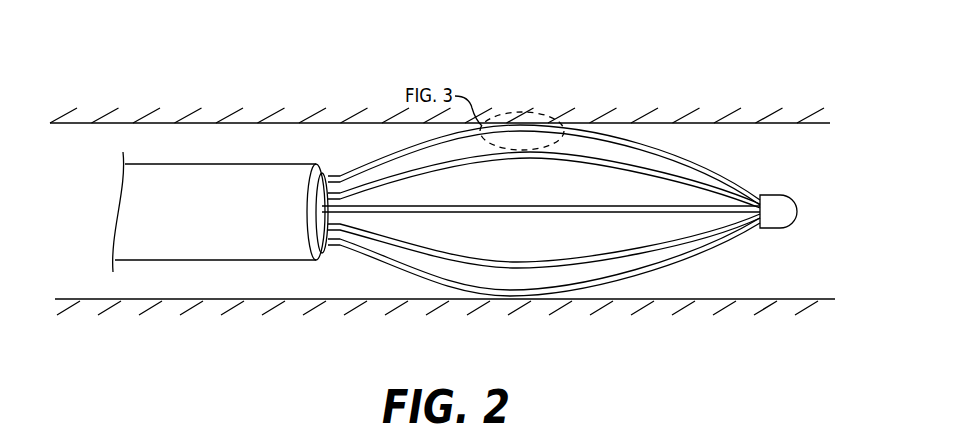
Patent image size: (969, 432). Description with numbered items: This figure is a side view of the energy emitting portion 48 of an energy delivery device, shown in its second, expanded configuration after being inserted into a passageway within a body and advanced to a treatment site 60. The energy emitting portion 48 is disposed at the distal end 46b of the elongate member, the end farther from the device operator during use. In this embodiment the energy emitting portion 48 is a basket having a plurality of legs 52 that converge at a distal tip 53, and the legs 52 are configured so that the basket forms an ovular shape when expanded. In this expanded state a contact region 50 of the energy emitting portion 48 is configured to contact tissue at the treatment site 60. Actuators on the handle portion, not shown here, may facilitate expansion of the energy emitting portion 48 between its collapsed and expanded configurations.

The treatment site 60 is at (58, 118).
The distal end 46b is at (317, 166).
The contact region 50 is at (527, 113).
The legs 52 is at (700, 166).
The distal tip 53 is at (774, 196).
The energy emitting portion 48 is at (694, 266).